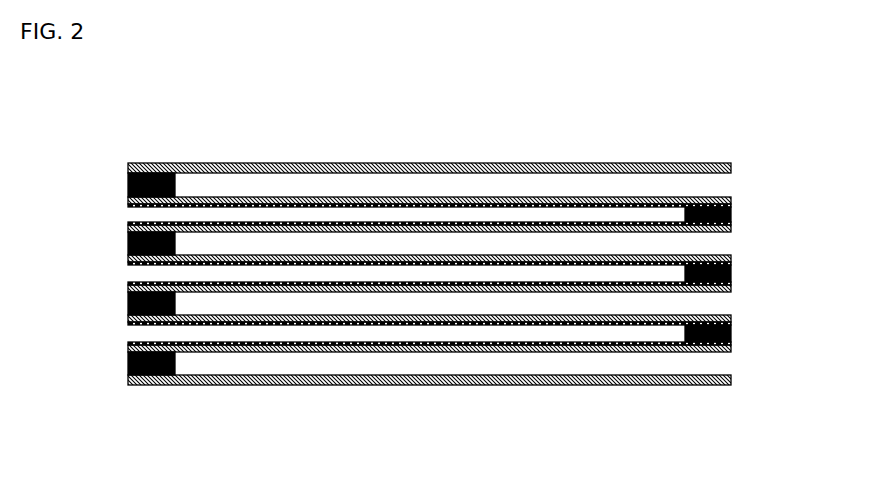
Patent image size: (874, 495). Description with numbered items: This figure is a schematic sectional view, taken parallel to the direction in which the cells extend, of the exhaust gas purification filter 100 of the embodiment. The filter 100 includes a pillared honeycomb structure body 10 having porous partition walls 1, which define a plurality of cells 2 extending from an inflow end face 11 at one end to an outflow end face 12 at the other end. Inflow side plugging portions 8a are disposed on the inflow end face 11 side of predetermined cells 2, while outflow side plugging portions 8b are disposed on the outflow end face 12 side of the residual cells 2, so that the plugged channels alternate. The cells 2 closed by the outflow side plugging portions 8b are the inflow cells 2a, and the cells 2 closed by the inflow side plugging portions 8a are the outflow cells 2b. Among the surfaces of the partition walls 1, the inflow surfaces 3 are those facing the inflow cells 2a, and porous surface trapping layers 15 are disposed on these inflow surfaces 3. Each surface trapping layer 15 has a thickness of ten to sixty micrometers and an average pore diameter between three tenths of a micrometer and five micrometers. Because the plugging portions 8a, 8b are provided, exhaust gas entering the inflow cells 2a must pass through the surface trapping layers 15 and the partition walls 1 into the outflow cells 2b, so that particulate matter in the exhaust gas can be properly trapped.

The exhaust gas purification filter 100 is at (779, 88).
The partition wall 1 is at (250, 200).
The cell 2 is at (401, 260).
The inflow cell 2a is at (137, 332).
The outflow cell 2b is at (296, 183).
The inflow surface 3 is at (437, 209).
The inflow side plugging portion 8a is at (128, 242).
The outflow side plugging portion 8b is at (732, 212).
The honeycomb structure body 10 is at (532, 392).
The inflow end face 11 is at (128, 289).
The outflow end face 12 is at (732, 257).
The surface trapping layer 15 is at (265, 343).